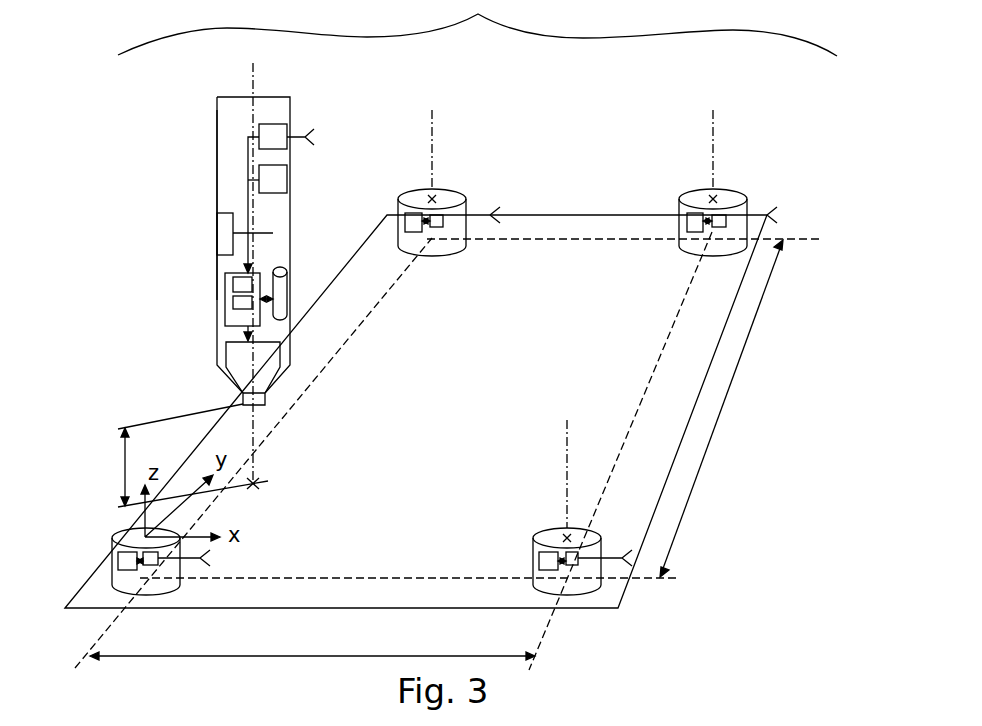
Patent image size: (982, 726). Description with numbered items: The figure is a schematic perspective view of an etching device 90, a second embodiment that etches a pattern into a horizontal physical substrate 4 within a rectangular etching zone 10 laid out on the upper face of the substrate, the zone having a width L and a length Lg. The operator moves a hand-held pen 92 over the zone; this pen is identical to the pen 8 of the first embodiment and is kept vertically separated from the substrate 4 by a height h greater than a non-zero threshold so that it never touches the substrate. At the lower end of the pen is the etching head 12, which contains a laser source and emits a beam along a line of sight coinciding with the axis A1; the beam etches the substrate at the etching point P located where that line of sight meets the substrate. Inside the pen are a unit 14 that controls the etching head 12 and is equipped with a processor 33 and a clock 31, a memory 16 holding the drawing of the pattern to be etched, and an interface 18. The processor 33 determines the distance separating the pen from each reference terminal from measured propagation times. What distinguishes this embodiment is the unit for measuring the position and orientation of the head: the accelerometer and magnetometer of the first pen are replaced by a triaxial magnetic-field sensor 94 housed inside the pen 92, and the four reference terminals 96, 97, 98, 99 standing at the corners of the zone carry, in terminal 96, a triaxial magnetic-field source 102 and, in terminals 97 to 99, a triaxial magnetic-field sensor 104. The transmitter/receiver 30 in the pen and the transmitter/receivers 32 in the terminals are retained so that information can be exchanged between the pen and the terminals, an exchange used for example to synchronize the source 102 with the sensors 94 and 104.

The substrate 4 is at (626, 592).
The pen 8 is at (293, 206).
The etching zone 10 is at (593, 237).
The etching head 12 is at (238, 360).
The unit 14 is at (228, 318).
The memory 16 is at (282, 291).
The interface 18 is at (217, 230).
The transmitter/receiver 30 is at (268, 124).
The clock 31 is at (233, 301).
The transmitter/receiver 32 is at (437, 227).
The processor 33 is at (233, 284).
The etching device 90 is at (477, 28).
The pen 92 is at (213, 148).
The triaxial magnetic-field sensor 94 is at (267, 179).
The terminal 96 is at (104, 542).
The terminal 97 is at (610, 530).
The terminal 98 is at (739, 178).
The terminal 99 is at (455, 178).
The triaxial magnetic-field source 102 is at (118, 561).
The triaxial magnetic-field sensor 104 is at (418, 213).
The axis A1 is at (250, 80).
The etching point P is at (262, 481).
The height h is at (186, 455).
The width L is at (312, 672).
The length Lg is at (721, 408).